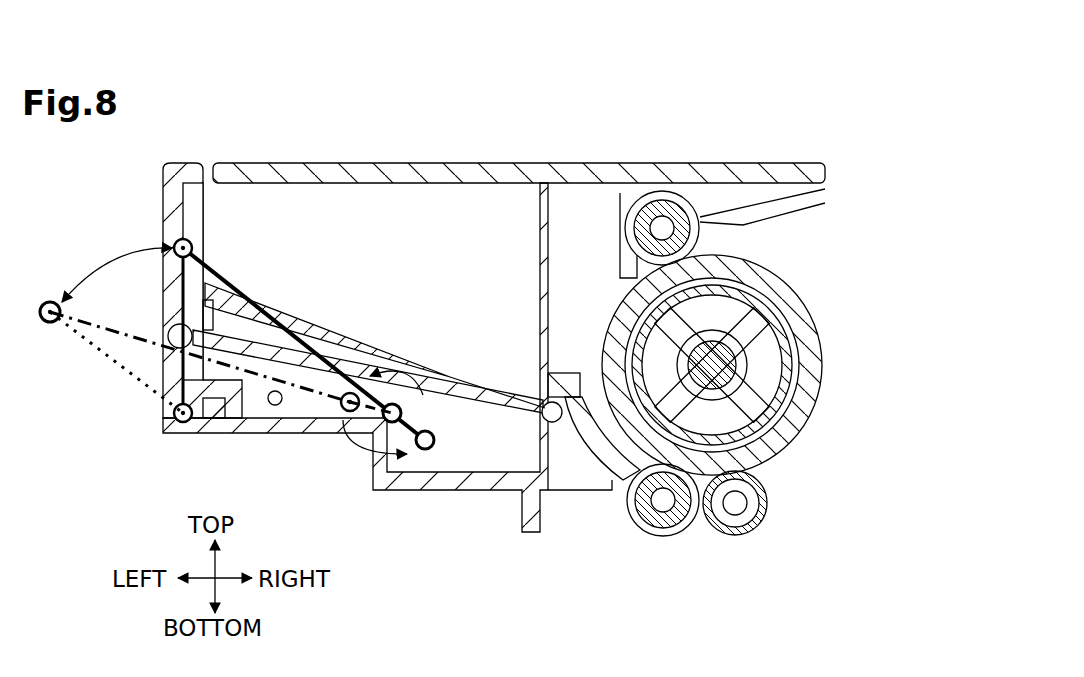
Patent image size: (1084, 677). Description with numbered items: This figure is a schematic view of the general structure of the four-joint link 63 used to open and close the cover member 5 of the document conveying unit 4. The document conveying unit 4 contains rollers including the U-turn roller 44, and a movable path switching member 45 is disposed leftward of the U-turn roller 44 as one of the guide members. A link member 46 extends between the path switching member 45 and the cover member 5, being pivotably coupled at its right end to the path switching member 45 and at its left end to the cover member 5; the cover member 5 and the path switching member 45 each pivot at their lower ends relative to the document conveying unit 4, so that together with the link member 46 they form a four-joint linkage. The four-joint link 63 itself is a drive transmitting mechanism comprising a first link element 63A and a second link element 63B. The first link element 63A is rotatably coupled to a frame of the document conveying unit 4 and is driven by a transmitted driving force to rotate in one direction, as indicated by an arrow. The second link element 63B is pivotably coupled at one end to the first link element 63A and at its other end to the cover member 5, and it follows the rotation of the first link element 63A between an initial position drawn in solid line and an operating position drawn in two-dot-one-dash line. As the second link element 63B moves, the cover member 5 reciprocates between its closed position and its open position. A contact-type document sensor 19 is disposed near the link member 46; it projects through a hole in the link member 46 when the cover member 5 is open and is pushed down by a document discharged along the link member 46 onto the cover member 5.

The document conveying unit 4 is at (628, 160).
The cover member 5 is at (178, 367).
The document sensor 19 is at (270, 388).
The U-turn roller 44 is at (780, 288).
The path switching member 45 is at (576, 450).
The link member 46 is at (490, 388).
The four-joint link 63 is at (360, 342).
The first link element 63A is at (420, 400).
The second link element 63B is at (280, 332).